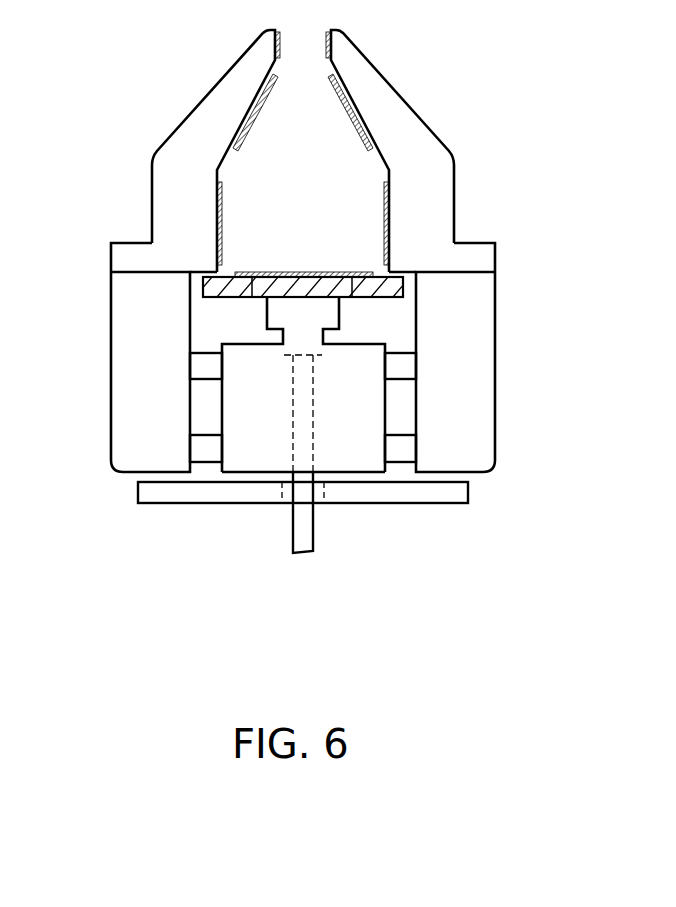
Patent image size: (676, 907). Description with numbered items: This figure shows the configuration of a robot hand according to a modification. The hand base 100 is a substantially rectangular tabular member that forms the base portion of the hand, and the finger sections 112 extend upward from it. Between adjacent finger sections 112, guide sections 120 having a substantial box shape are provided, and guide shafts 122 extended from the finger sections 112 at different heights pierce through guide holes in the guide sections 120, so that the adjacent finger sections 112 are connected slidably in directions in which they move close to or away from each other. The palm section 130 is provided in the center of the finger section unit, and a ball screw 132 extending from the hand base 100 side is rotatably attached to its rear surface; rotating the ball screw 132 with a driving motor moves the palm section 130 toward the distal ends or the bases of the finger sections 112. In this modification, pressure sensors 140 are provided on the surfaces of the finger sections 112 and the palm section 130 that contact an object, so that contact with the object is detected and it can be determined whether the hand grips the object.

The hand base 100 is at (400, 505).
The finger sections 112 is at (162, 145).
The guide sections 120 is at (222, 406).
The guide shafts 122 is at (400, 352).
The palm section 130 is at (233, 298).
The ball screw 132 is at (320, 515).
The pressure sensors 140 is at (323, 43).